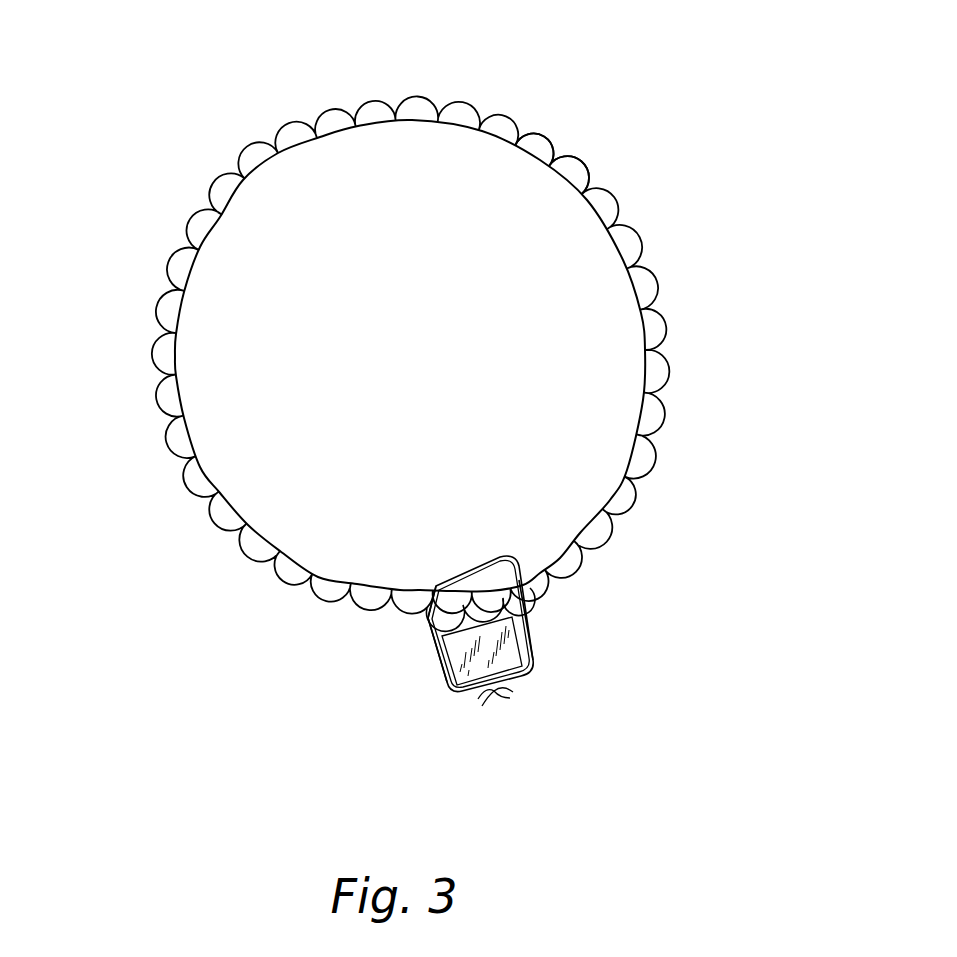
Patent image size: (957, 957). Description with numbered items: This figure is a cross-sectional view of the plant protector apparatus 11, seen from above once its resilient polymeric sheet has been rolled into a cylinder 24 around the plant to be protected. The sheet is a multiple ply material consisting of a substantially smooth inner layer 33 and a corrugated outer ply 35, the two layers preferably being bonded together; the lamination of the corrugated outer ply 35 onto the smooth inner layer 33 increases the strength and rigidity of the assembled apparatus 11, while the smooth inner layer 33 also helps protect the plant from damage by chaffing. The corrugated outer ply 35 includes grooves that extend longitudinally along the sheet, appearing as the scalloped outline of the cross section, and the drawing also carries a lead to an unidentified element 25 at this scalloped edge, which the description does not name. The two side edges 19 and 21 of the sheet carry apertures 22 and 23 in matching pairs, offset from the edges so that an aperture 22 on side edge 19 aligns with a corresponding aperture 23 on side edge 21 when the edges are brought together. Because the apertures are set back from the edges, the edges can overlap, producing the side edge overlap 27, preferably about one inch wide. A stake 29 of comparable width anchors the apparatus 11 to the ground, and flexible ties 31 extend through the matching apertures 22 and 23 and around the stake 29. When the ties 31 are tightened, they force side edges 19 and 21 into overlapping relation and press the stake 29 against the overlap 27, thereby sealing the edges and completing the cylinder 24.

The plant protector apparatus 11 is at (702, 216).
The side edge 19 is at (433, 647).
The side edge 21 is at (492, 568).
The aperture 22 is at (520, 603).
The aperture 23 is at (425, 613).
The cylinder 24 is at (158, 527).
The scallop 25 is at (560, 160).
The side edge overlap 27 is at (427, 617).
The stake 29 is at (525, 640).
The flexible tie 31 is at (467, 697).
The inner layer 33 is at (419, 122).
The corrugated outer ply 35 is at (297, 127).